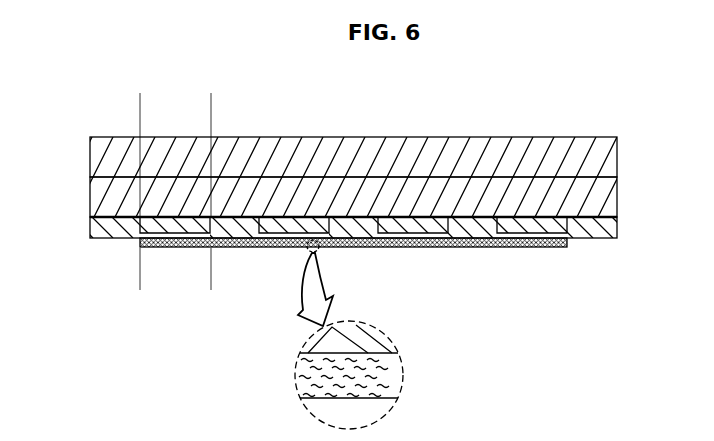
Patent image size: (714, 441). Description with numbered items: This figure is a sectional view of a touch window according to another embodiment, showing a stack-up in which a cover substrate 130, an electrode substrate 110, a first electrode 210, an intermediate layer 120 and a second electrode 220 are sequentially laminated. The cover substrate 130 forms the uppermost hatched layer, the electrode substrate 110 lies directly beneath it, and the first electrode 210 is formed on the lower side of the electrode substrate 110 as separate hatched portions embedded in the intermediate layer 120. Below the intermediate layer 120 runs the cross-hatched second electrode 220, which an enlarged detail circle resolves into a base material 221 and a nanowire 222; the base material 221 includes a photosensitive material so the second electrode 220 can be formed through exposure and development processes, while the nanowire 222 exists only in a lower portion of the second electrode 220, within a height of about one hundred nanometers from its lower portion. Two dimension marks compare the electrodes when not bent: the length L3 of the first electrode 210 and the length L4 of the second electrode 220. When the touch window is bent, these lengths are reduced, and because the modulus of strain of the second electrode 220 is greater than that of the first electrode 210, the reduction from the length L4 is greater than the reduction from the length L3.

The electrode substrate 110 is at (617, 195).
The cover substrate 130 is at (617, 154).
The intermediate layer 120 is at (468, 228).
The first electrode 210 is at (538, 233).
The second electrode 220 is at (417, 241).
The base material 221 is at (398, 383).
The nanowire 222 is at (388, 362).
The length of the first electrode L3 is at (140, 103).
The length of the second electrode L4 is at (140, 279).